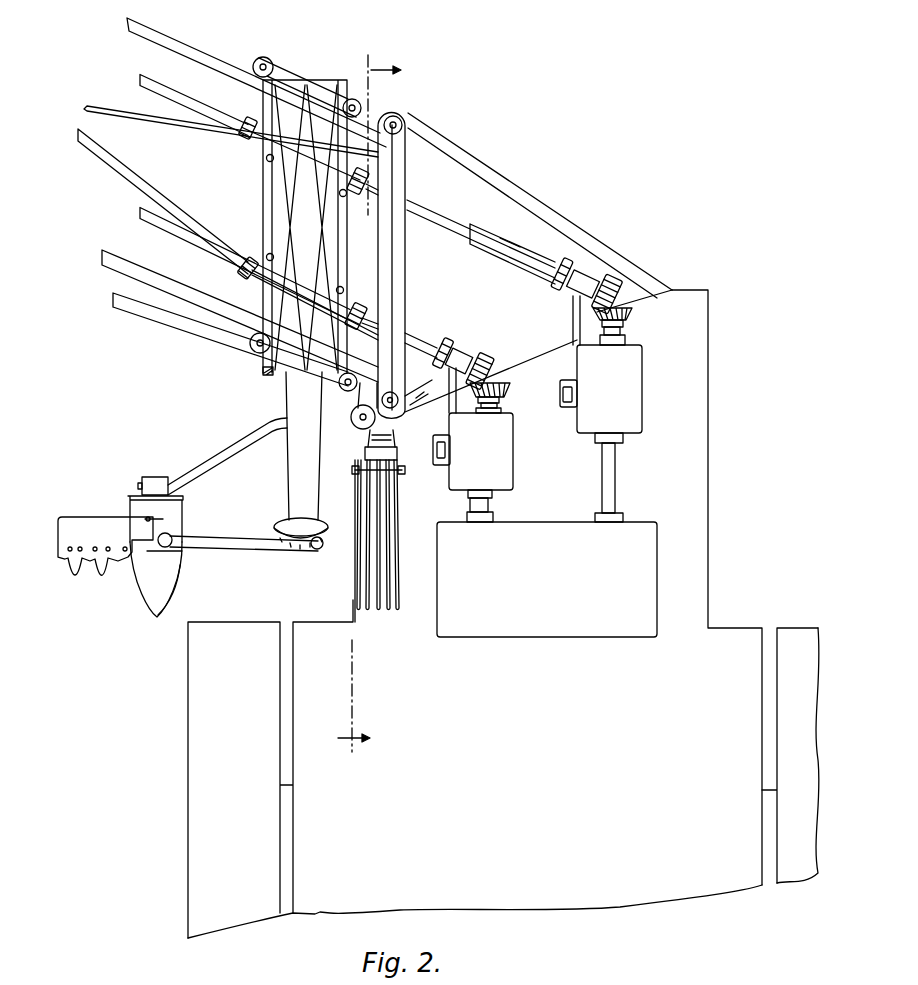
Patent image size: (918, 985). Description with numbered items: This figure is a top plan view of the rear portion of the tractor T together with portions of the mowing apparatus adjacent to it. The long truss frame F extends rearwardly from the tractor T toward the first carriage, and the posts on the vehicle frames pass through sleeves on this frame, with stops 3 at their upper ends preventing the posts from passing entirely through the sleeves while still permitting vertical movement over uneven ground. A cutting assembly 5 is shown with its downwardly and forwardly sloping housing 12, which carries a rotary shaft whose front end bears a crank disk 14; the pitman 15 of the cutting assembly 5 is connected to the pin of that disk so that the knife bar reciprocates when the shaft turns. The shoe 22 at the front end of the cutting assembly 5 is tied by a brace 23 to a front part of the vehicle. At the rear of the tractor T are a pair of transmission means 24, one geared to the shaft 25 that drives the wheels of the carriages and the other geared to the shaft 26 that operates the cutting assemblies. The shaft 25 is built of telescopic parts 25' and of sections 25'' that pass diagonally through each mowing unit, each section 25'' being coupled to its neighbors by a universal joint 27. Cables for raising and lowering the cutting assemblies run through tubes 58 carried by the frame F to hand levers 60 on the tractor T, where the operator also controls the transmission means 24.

The truss frame F is at (216, 52).
The tractor T is at (738, 638).
The stops 3 is at (376, 403).
The cutting assembly 5 is at (95, 576).
The housing 12 is at (296, 462).
The crank disk 14 is at (322, 518).
The pitman 15 is at (261, 540).
The shoe 22 is at (160, 600).
The brace 23 is at (233, 452).
The transmission means 24 is at (513, 460).
The shaft 25 is at (515, 257).
The telescopic parts 25' is at (471, 244).
The shaft section 25'' is at (317, 118).
The shaft 26 is at (422, 340).
The universal joint 27 is at (256, 148).
The tubes 58 is at (224, 338).
The levers 60 is at (383, 612).